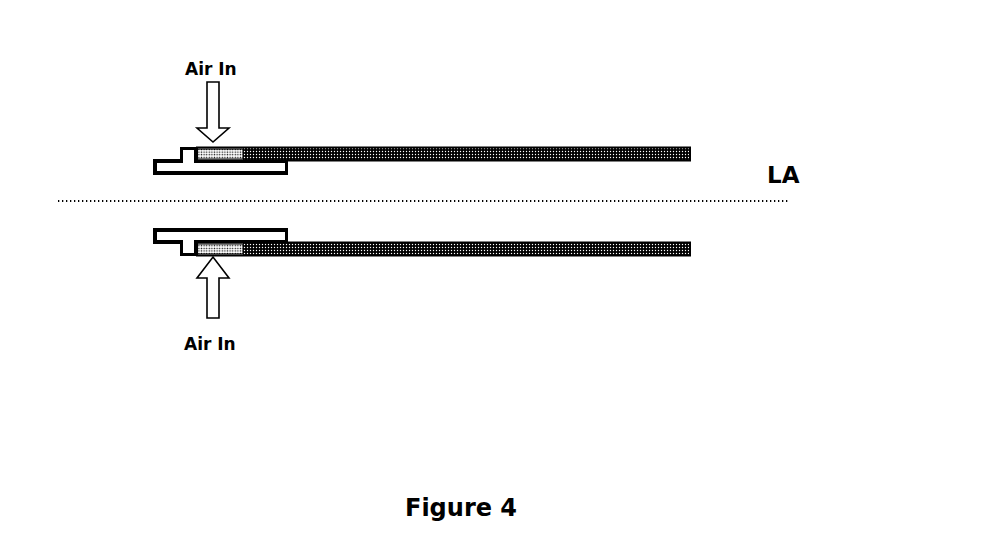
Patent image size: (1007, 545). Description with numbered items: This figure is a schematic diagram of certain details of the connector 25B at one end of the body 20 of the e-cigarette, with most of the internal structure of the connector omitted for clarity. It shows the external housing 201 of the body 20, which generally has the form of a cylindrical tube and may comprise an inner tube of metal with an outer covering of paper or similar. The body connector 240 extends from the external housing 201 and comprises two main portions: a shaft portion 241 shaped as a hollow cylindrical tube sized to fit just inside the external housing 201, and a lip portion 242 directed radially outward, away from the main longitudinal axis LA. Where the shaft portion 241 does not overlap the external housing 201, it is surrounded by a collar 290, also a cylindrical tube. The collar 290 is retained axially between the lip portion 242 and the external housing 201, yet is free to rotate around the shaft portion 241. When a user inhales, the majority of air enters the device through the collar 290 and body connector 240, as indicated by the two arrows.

The body 20 is at (552, 310).
The external housing 201 is at (658, 258).
The body connector 240 is at (175, 168).
The shaft portion 241 is at (272, 237).
The lip portion 242 is at (178, 257).
The collar 290 is at (243, 143).
The connector 25B is at (155, 332).